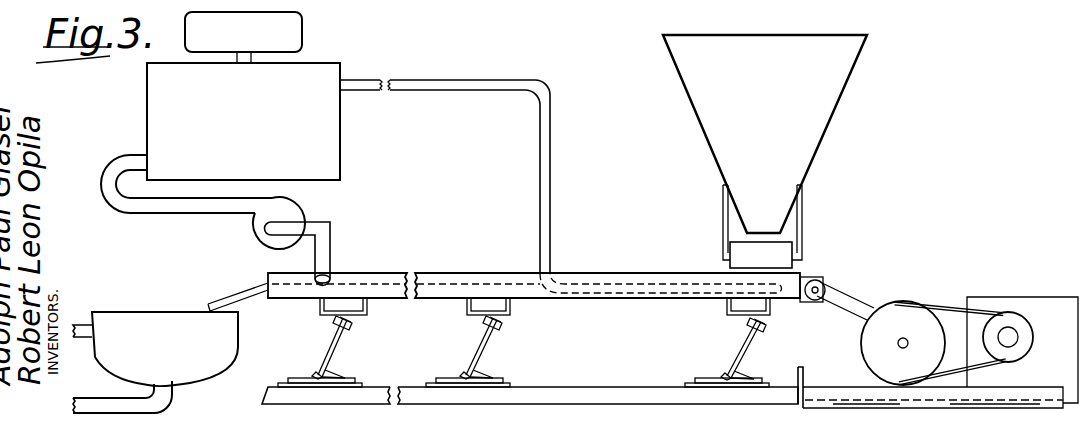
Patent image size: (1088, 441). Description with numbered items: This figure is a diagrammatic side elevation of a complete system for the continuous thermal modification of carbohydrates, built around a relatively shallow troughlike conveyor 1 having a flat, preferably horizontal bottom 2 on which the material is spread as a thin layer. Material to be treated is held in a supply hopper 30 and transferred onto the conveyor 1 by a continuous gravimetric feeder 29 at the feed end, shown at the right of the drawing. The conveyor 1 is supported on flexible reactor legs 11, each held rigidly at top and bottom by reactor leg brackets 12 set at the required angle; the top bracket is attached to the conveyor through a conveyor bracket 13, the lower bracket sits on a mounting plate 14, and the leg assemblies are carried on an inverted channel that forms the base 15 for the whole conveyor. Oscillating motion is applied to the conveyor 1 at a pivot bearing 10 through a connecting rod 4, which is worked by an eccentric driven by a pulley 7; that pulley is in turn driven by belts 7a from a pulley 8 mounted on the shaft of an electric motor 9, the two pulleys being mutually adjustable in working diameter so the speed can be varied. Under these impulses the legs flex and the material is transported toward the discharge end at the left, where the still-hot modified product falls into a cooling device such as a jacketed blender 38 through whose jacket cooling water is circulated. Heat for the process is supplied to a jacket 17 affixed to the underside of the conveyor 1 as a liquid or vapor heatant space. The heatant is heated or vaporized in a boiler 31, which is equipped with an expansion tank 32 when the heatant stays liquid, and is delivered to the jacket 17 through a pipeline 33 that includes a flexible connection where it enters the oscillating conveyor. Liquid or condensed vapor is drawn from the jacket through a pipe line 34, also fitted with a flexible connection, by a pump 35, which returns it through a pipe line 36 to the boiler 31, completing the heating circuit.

The troughlike conveyor 1 is at (479, 268).
The bottom 2 is at (420, 283).
The connecting rod 4 is at (858, 309).
The pulley 7 is at (897, 311).
The belts 7a is at (945, 304).
The pulley 8 is at (1012, 334).
The electric motor 9 is at (996, 299).
The pivot bearing 10 is at (823, 283).
The reactor legs 11 is at (340, 343).
The reactor leg brackets 12 is at (742, 322).
The conveyor bracket 13 is at (727, 306).
The mounting plate 14 is at (700, 378).
The base 15 is at (588, 393).
The jacket 17 is at (533, 298).
The continuous gravimetric feeder 29 is at (775, 248).
The supply hopper 30 is at (822, 92).
The boiler 31 is at (310, 145).
The expansion tank 32 is at (288, 32).
The pipeline 33 is at (551, 157).
The pipe line 34 is at (321, 243).
The pump 35 is at (283, 214).
The pipe line 36 is at (203, 212).
The jacketed blender 38 is at (134, 323).